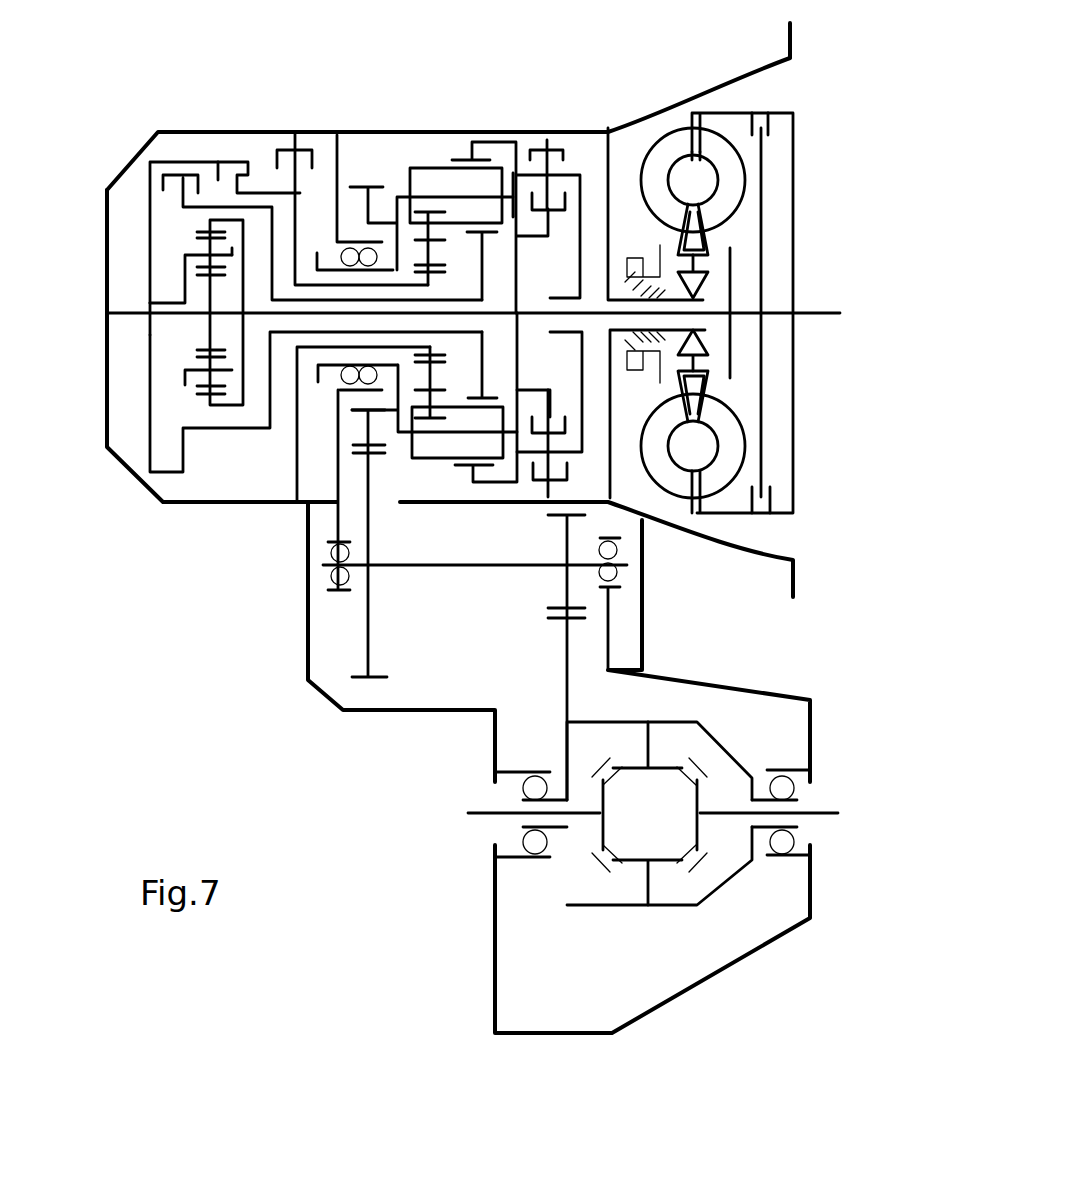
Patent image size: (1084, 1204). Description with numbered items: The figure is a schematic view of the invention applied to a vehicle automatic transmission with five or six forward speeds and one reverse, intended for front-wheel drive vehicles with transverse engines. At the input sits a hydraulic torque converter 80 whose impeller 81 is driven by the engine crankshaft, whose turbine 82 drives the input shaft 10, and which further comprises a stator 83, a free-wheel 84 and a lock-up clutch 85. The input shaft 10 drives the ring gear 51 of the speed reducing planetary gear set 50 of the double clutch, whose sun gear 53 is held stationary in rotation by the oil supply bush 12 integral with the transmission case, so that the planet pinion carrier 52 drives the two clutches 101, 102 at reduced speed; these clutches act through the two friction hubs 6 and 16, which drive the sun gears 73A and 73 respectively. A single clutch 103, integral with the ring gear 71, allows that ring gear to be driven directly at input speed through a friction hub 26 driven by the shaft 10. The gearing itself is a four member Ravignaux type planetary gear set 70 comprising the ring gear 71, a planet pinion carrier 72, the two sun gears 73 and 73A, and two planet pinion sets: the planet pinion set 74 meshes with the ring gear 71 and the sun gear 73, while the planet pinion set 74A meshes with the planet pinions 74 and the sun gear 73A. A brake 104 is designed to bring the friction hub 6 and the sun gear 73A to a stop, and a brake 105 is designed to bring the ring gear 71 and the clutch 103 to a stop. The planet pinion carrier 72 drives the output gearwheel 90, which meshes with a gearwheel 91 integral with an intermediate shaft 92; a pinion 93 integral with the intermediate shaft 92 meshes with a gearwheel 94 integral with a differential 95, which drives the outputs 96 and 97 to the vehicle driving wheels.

The friction hub 6 is at (257, 192).
The input shaft 10 is at (276, 308).
The oil supply bush 12 is at (130, 314).
The friction hub 16 is at (213, 200).
The friction hub 26 is at (604, 205).
The planetary gear set 50 is at (185, 224).
The ring gear 51 is at (213, 417).
The planet pinion carrier 52 is at (200, 381).
The sun gear 53 is at (213, 340).
The Ravignaux type planetary gear set 70 is at (426, 154).
The ring gear 71 is at (477, 142).
The planet pinion carrier 72 is at (430, 195).
The sun gear 73 is at (484, 360).
The sun gear 73A is at (350, 440).
The planet pinion set 74 is at (445, 460).
The planet pinion set 74A is at (373, 385).
The hydraulic torque converter 80 is at (803, 133).
The impeller 81 is at (680, 133).
The turbine 82 is at (733, 183).
The stator 83 is at (697, 237).
The free-wheel 84 is at (701, 283).
The lock-up clutch 85 is at (773, 487).
The output gearwheel 90 is at (336, 497).
The gearwheel 91 is at (330, 542).
The intermediate shaft 92 is at (465, 568).
The pinion 93 is at (568, 593).
The gearwheel 94 is at (568, 651).
The differential 95 is at (686, 932).
The output 96 is at (483, 813).
The output 97 is at (823, 815).
The clutch 101 is at (253, 175).
The clutch 102 is at (167, 172).
The single clutch 103 is at (553, 195).
The brake 104 is at (303, 143).
The brake 105 is at (533, 137).